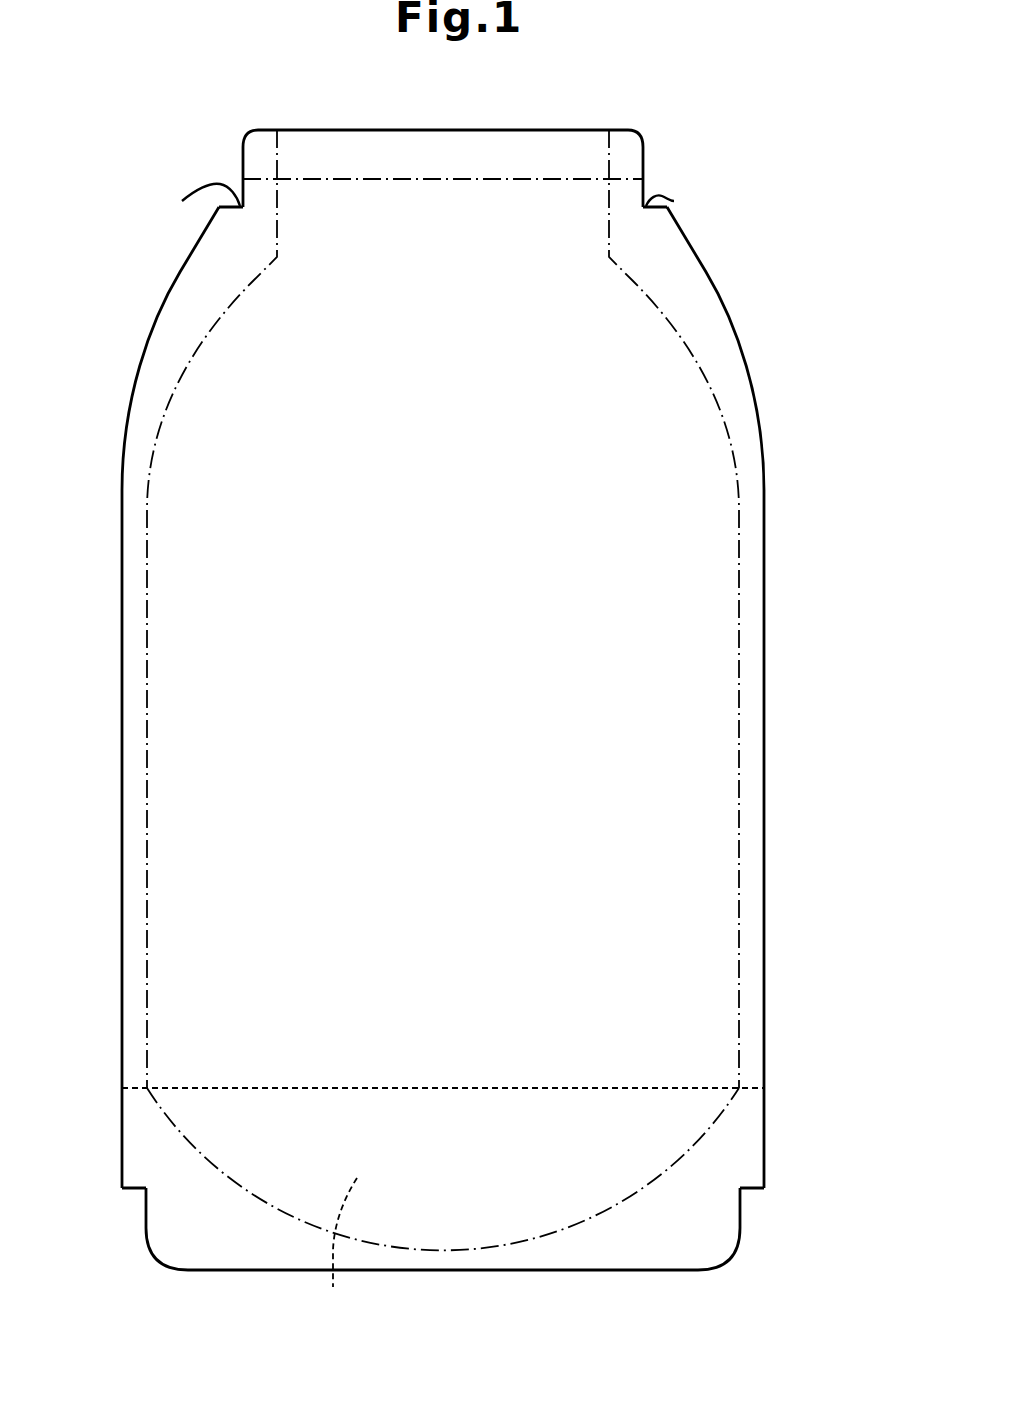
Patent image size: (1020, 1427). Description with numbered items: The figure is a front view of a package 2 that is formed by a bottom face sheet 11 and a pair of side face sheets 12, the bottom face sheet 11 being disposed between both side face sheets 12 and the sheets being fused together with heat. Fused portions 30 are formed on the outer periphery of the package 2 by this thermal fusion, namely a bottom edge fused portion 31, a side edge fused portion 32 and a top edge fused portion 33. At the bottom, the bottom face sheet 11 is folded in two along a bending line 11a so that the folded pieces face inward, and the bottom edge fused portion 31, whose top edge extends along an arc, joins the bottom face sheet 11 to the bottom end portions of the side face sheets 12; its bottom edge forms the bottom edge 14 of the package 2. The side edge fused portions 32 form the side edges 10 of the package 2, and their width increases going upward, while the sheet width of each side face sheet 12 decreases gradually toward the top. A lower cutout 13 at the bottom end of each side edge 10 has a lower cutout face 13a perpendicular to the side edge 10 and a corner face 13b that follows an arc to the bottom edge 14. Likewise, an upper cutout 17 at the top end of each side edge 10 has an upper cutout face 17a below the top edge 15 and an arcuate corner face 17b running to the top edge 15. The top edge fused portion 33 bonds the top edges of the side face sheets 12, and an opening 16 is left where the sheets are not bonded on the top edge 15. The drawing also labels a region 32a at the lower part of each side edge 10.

The package 2 is at (792, 133).
The side edge 10 is at (120, 632).
The bottom face sheet 11 is at (338, 1249).
The bending line 11a is at (487, 1092).
The side face sheet 12 is at (717, 600).
The lower cutout 13 is at (128, 1211).
The lower cutout face 13a is at (130, 1198).
The corner face 13b is at (150, 1228).
The bottom edge 14 is at (470, 1270).
The top edge 15 is at (523, 128).
The opening 16 is at (473, 150).
The upper cutout 17 is at (195, 181).
The upper cutout face 17a is at (182, 201).
The corner face 17b is at (247, 132).
The fused portion 30 is at (748, 453).
The bottom edge fused portion 31 is at (622, 1250).
The side edge fused portion 32 is at (757, 680).
The lower side wall 32a is at (120, 915).
The top edge fused portion 33 is at (375, 143).